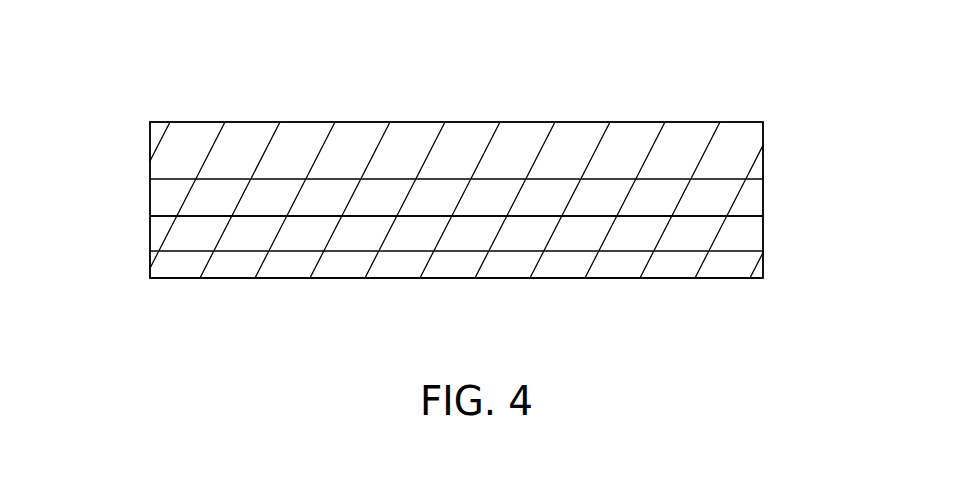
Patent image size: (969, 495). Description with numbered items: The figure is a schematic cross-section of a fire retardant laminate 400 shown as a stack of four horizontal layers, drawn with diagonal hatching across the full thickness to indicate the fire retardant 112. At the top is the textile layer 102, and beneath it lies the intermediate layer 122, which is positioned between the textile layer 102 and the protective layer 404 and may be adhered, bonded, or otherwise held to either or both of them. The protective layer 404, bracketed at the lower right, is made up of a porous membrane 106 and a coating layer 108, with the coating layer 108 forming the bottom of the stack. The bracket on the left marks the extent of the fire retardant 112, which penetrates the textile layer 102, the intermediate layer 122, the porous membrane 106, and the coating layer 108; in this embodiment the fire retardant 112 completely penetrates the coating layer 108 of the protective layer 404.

The fire retardant laminate 400 is at (222, 89).
The fire retardant 112 is at (93, 275).
The textile layer 102 is at (770, 185).
The intermediate layer 122 is at (151, 193).
The protective layer 404 is at (770, 278).
The porous membrane 106 is at (240, 230).
The coating layer 108 is at (683, 270).